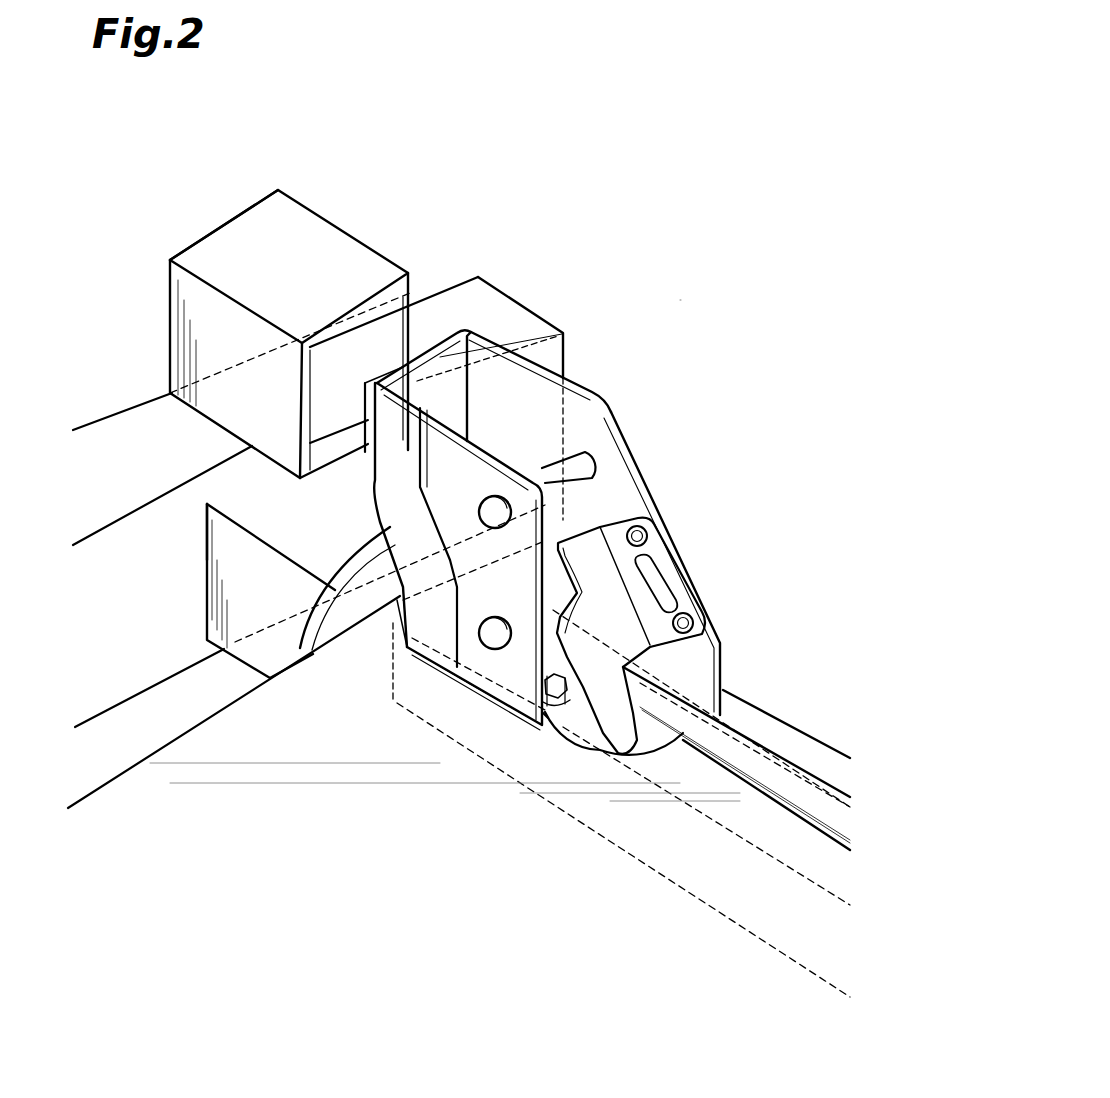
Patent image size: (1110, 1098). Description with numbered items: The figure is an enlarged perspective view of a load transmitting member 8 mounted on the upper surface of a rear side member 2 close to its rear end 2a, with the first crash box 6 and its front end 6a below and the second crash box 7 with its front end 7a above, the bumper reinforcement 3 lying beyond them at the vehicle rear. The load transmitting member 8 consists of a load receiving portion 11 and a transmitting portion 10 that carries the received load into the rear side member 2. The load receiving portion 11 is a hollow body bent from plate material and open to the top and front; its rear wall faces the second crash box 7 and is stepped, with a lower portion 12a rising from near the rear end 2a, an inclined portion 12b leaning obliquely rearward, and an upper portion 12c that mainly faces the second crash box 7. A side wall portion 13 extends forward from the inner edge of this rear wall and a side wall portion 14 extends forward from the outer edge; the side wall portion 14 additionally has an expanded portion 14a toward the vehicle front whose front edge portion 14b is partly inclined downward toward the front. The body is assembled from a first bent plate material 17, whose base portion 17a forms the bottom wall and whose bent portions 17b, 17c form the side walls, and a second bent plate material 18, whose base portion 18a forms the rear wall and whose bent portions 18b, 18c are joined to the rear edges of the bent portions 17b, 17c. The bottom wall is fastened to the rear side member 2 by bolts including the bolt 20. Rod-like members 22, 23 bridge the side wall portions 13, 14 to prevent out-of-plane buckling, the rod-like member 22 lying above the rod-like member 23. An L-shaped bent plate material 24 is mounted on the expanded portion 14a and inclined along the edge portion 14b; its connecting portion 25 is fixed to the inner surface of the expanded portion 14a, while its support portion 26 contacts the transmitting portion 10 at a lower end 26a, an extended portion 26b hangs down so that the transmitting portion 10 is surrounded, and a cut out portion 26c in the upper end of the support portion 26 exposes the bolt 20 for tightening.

The rear side member 2 is at (673, 880).
The rear end 2a is at (393, 690).
The bumper reinforcement 3 is at (445, 278).
The first crash box 6 is at (262, 553).
The front end of first crash box 6a is at (210, 522).
The second crash box 7 is at (300, 240).
The front end of second crash box 7a is at (210, 237).
The load transmitting member 8 is at (735, 145).
The transmitting portion 10 is at (768, 737).
The load receiving portion 11 is at (541, 487).
The lower portion 12a is at (392, 622).
The inclined portion 12b is at (383, 532).
The upper portion 12c is at (365, 422).
The side wall portion 13 is at (495, 840).
The side wall portion 14 is at (590, 236).
The expanded portion 14a is at (650, 490).
The front edge portion 14b is at (683, 553).
The first bent plate material 17 is at (592, 393).
The base portion 17a is at (580, 710).
The bent portion 17b is at (490, 663).
The bent portion 17c is at (540, 403).
The second bent plate material 18 is at (455, 325).
The base portion 18a is at (425, 367).
The bent portion 18b is at (433, 636).
The bent portion 18c is at (478, 330).
The bolt 20 is at (560, 697).
The rod-like member 22 is at (535, 462).
The rod-like member 23 is at (545, 600).
The bent plate material 24 is at (667, 591).
The connecting portion 25 is at (620, 540).
The support portion 26 is at (586, 552).
The lower end 26a is at (643, 673).
The extended portion 26b is at (627, 738).
The cut out portion 26c is at (583, 597).